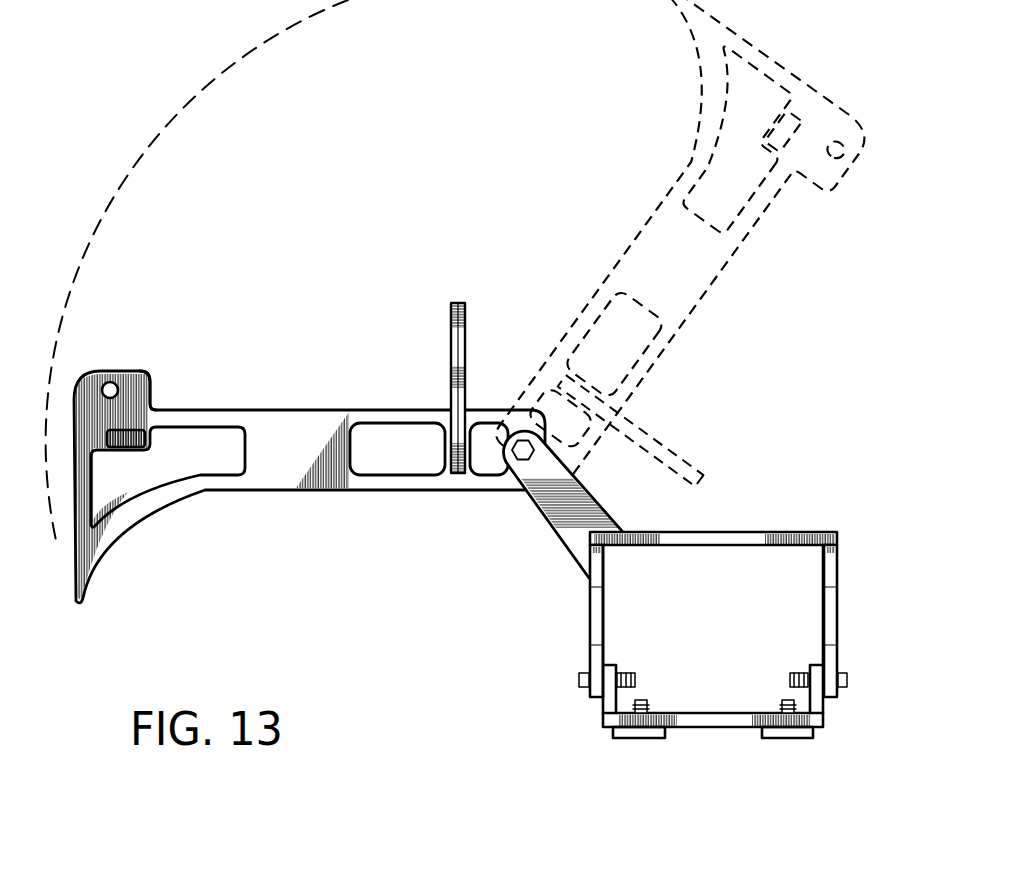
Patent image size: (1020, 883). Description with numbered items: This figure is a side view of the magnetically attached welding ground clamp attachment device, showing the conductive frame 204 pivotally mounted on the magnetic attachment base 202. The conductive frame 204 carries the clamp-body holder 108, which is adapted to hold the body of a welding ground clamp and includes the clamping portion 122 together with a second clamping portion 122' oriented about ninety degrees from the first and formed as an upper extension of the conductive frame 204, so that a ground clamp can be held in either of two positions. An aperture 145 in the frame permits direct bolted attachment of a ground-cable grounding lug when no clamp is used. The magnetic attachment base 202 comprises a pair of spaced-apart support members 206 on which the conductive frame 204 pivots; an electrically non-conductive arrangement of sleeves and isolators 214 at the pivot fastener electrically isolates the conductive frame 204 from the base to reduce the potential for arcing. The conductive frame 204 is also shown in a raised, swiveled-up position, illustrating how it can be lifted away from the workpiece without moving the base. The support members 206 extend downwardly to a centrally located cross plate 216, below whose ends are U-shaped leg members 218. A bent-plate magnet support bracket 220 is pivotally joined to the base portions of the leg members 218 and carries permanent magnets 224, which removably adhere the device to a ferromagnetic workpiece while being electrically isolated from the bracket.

The clamp-body holder 108 is at (429, 328).
The clamping portion 122 is at (174, 476).
The second clamping portion 122' is at (193, 376).
The aperture 145 is at (111, 382).
The magnetic attachment base 202 is at (715, 605).
The conductive frame 204 is at (318, 375).
The support members 206 is at (547, 518).
The sleeves and isolators 214 is at (507, 485).
The cross plate 216 is at (766, 546).
The U-shaped leg members 218 is at (592, 623).
The magnet support bracket 220 is at (700, 713).
The permanent magnets 224 is at (640, 739).